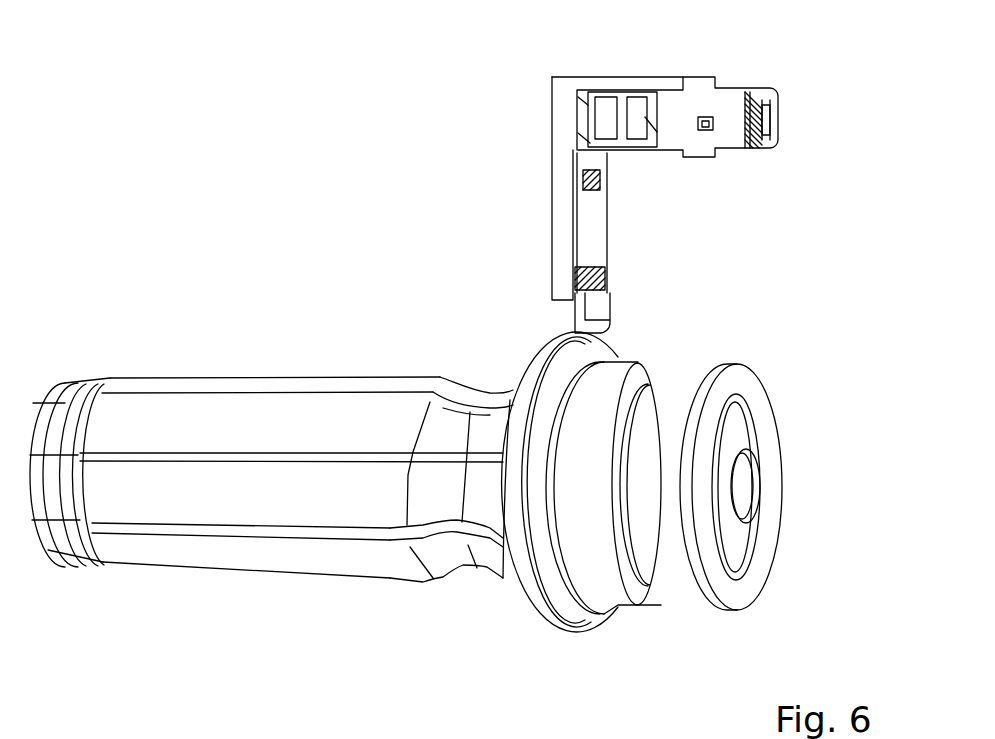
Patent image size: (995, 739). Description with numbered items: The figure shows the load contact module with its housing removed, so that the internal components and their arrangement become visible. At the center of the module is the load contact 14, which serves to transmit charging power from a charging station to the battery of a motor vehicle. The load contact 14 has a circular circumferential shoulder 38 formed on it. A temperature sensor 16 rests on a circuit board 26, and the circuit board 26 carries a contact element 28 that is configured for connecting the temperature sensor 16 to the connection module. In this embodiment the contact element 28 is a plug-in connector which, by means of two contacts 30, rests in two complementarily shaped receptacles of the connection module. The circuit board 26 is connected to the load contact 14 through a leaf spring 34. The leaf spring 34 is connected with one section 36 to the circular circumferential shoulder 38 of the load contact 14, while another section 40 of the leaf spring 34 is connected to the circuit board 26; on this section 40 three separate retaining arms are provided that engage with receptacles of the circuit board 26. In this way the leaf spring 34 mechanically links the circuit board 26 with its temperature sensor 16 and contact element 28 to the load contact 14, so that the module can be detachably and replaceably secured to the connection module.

The load contact 14 is at (407, 512).
The temperature sensor 16 is at (600, 179).
The circuit board 26 is at (553, 242).
The contact element 28 is at (737, 84).
The contacts 30 is at (760, 98).
The leaf spring 34 is at (593, 317).
The section 36 is at (545, 345).
The circular circumferential shoulder 38 is at (530, 592).
The section 40 is at (607, 284).